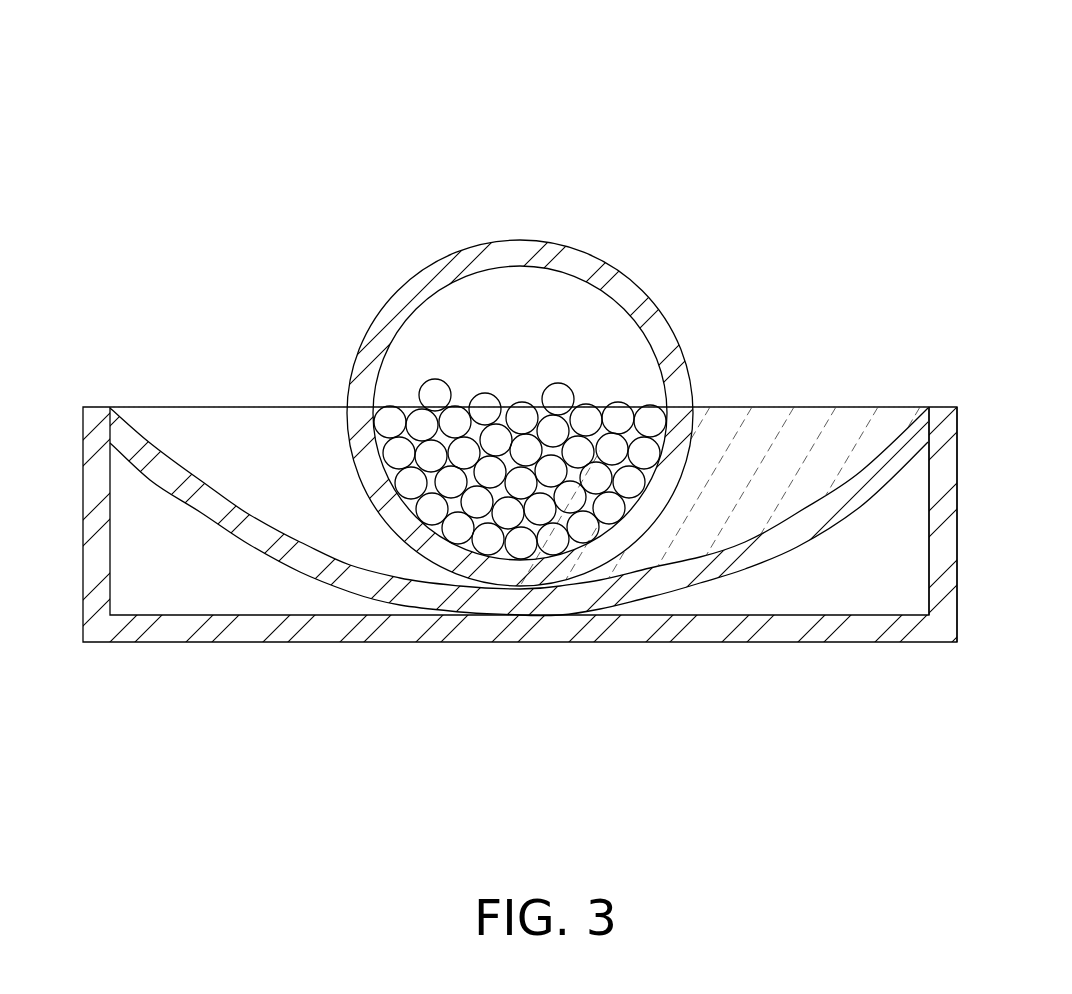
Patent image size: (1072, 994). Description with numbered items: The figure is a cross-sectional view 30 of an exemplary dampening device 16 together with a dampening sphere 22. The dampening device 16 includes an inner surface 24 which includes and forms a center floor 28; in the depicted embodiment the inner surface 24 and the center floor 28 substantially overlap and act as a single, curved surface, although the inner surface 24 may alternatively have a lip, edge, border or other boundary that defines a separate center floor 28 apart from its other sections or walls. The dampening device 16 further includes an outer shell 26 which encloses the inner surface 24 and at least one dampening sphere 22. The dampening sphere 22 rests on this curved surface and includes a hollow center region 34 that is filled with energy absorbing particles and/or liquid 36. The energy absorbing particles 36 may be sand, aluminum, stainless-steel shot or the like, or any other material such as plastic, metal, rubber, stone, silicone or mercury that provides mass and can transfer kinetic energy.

The cross-sectional view 30 is at (703, 108).
The dampening device 16 is at (95, 488).
The outer shell 26 is at (945, 537).
The inner surface 24 is at (893, 440).
The center floor 28 is at (757, 523).
The dampening sphere 22 is at (641, 292).
The hollow center region 34 is at (458, 323).
The energy absorbing particles 36 is at (421, 393).